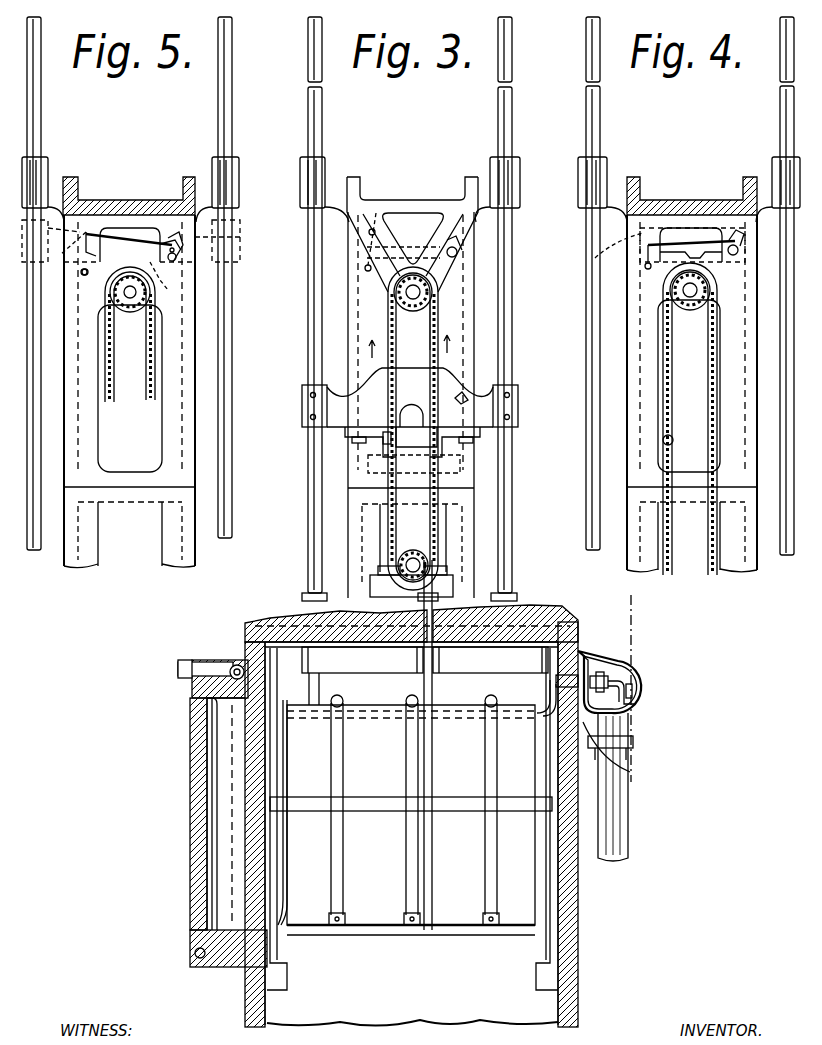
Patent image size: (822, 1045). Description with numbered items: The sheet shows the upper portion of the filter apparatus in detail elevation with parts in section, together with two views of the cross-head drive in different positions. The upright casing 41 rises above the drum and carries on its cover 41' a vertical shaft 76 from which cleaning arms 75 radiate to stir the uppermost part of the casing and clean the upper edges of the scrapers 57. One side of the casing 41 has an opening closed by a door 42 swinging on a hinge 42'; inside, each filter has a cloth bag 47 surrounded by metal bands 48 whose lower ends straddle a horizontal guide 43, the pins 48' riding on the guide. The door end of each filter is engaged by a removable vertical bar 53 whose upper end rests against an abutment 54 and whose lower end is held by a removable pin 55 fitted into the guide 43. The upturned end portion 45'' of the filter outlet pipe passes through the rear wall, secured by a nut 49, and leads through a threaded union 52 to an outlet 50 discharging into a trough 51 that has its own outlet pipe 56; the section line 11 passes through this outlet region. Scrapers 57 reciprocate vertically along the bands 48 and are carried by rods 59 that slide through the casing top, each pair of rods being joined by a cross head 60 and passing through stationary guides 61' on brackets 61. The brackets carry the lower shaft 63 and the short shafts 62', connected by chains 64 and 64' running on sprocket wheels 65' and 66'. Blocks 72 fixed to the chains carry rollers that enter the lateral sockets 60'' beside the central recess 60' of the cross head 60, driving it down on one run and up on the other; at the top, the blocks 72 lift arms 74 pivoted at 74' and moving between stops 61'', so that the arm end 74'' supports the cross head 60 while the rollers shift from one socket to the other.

In FIG. 3, the section line 11 is at (645, 613).
In FIG. 3, the casing 41 is at (411, 824).
In FIG. 3, the cover 41' is at (405, 611).
In FIG. 3, the door 42 is at (200, 814).
In FIG. 3, the horizontal hinge 42' is at (212, 951).
In FIG. 3, the horizontal guides 43 is at (385, 933).
In FIG. 3, the upturned end portion 45'' is at (639, 756).
In FIG. 3, the cloth bag 47 is at (411, 815).
In FIG. 3, the metal bands 48 is at (414, 805).
In FIG. 3, the pins 48' is at (414, 909).
In FIG. 3, the nut 49 is at (583, 673).
In FIG. 3, the outlet 50 is at (624, 688).
In FIG. 3, the trough 51 is at (641, 691).
In FIG. 3, the threaded sleeve or union 52 is at (604, 681).
In FIG. 3, the removable vertical bar 53 is at (272, 673).
In FIG. 3, the abutment 54 is at (248, 661).
In FIG. 3, the removable pin 55 is at (285, 920).
In FIG. 3, the outlet pipe 56 is at (613, 853).
In FIG. 3, the scrapers 57 is at (441, 797).
In FIG. 5, the rods 59 is at (41, 120).
In FIG. 3, the rods 59 is at (322, 111).
In FIG. 4, the rods 59 is at (600, 118).
In FIG. 3, the cross head 60 is at (410, 397).
In FIG. 3, the opening or recess 60' is at (416, 410).
In FIG. 3, the lateral sockets 60'' is at (442, 452).
In FIG. 5, the brackets 61 is at (131, 366).
In FIG. 3, the brackets 61 is at (407, 383).
In FIG. 4, the brackets 61 is at (689, 368).
In FIG. 5, the stationary guides 61' is at (130, 166).
In FIG. 3, the stationary guides 61' is at (410, 172).
In FIG. 4, the stationary guides 61' is at (689, 172).
In FIG. 5, the stops 61'' is at (74, 274).
In FIG. 3, the stops 61'' is at (402, 199).
In FIG. 4, the stops 61'' is at (601, 255).
In FIG. 3, the short shafts 62' is at (457, 278).
In FIG. 3, the shaft 63 is at (396, 564).
In FIG. 5, the chains 64 is at (130, 334).
In FIG. 3, the chains 64 is at (409, 428).
In FIG. 4, the chains 64 is at (705, 419).
In FIG. 3, the chains 64' is at (458, 338).
In FIG. 3, the sprocket wheels 65' is at (415, 314).
In FIG. 3, the sprocket wheels 66' is at (415, 548).
In FIG. 5, the blocks 72 is at (118, 306).
In FIG. 3, the blocks 72 is at (381, 437).
In FIG. 4, the blocks 72 is at (670, 439).
In FIG. 5, the arms 74 is at (144, 216).
In FIG. 3, the arms 74 is at (405, 238).
In FIG. 4, the arms 74 is at (696, 261).
In FIG. 5, the pivot 74' is at (175, 289).
In FIG. 3, the pivot 74' is at (500, 239).
In FIG. 4, the pivot 74' is at (708, 239).
In FIG. 5, the arm end 74'' is at (219, 266).
In FIG. 4, the arm end 74'' is at (775, 247).
In FIG. 3, the cleaning arms 75 is at (362, 676).
In FIG. 3, the vertical shaft 76 is at (483, 745).